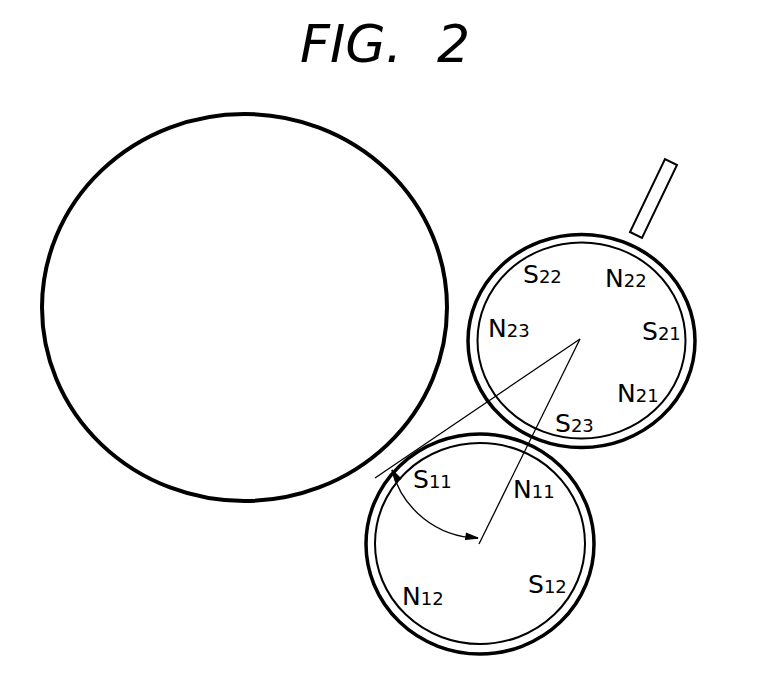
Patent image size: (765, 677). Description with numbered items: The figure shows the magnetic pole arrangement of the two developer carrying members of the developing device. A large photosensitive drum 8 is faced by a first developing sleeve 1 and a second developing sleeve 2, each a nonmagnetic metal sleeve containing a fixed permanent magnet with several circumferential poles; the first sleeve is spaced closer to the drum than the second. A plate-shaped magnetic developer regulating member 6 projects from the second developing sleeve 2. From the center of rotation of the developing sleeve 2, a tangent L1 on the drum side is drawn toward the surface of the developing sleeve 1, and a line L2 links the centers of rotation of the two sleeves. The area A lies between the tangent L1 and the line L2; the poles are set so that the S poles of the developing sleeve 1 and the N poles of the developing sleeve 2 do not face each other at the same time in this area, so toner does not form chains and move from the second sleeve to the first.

The photosensitive drum 8 is at (399, 170).
The developing sleeve 2 is at (674, 273).
The developer regulating member 6 is at (658, 203).
The developing sleeve 1 is at (588, 509).
The tangent L1 is at (552, 357).
The line L2 is at (572, 360).
The area A is at (435, 506).